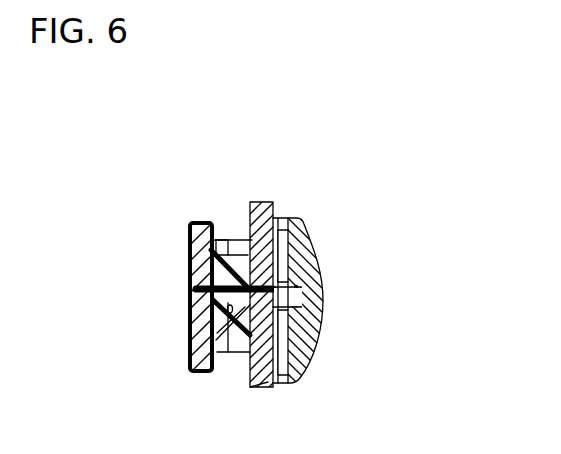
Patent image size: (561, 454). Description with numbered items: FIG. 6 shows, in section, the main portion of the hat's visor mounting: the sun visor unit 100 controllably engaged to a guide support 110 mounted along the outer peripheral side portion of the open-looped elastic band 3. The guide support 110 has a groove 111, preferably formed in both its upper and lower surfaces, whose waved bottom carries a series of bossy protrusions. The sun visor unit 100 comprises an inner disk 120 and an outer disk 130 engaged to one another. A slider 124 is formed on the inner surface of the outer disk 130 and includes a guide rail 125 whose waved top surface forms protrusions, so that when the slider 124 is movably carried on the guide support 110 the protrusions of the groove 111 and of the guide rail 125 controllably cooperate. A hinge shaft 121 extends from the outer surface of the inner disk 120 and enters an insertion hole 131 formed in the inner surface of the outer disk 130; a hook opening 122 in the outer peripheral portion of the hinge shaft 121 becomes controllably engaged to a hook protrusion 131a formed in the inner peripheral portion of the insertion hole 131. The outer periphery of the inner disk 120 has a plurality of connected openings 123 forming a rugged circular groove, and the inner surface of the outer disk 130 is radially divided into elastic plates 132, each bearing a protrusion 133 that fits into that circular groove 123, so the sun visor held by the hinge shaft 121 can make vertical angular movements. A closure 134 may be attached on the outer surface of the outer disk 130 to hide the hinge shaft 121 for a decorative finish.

The sun visor unit 100 is at (145, 253).
The elastic band 3 is at (188, 224).
The guide support 110 is at (187, 302).
The groove 111 is at (228, 352).
The inner disk 120 is at (272, 202).
The hinge shaft 121 is at (307, 302).
The hook opening 122 is at (303, 290).
The openings (circular groove) 123 is at (248, 355).
The slider 124 is at (222, 250).
The guide rail 125 is at (233, 252).
The outer disk 130 is at (307, 237).
The insertion hole 131 is at (303, 276).
The hook protrusion 131a is at (305, 268).
The elastic plate 132 is at (306, 362).
The protrusion 133 is at (276, 380).
The closure 134 is at (308, 330).